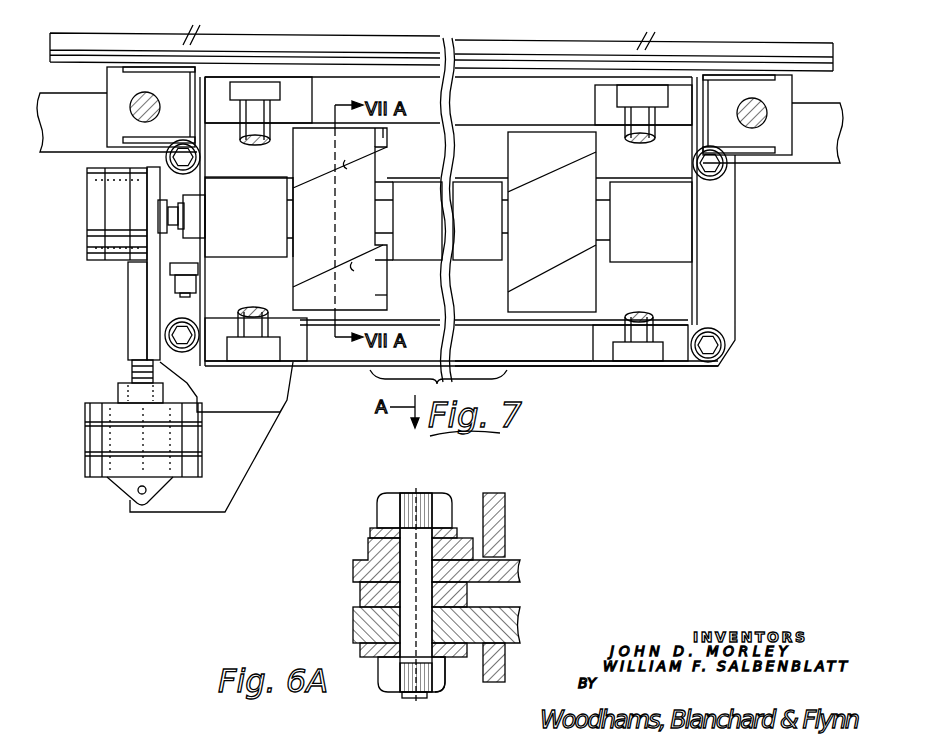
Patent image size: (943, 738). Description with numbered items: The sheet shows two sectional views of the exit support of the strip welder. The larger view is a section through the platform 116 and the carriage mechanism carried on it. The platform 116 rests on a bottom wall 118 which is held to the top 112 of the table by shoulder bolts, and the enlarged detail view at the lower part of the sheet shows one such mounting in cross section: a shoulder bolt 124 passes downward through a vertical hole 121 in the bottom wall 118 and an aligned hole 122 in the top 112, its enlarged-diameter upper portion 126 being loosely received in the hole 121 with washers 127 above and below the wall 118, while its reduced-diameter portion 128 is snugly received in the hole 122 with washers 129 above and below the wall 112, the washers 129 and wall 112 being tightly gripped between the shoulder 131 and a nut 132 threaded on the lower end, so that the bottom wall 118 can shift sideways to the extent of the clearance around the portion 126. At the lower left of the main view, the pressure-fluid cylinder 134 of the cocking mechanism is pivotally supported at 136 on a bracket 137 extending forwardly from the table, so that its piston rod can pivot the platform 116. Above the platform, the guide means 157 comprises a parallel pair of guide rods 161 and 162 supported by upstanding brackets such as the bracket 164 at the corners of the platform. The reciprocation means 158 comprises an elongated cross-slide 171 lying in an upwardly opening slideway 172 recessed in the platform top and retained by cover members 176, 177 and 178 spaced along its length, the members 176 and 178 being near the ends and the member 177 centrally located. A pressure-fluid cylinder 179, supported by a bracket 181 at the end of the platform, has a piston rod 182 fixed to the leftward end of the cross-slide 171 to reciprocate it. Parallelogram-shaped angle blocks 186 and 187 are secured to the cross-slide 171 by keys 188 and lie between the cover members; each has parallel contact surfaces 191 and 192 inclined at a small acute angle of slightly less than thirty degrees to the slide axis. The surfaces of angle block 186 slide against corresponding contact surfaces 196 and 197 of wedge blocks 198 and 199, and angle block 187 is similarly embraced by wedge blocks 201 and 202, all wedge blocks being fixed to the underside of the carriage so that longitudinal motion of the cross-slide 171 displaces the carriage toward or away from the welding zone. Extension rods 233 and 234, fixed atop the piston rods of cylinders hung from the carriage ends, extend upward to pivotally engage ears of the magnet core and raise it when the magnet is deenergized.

In FIG. 6A, the top 112 is at (518, 623).
In FIG. 7, the platform 116 is at (578, 358).
In FIG. 7, the bottom wall 118 is at (727, 262).
In FIG. 6A, the bottom wall 118 is at (520, 575).
In FIG. 6A, the vertical holes 121 is at (473, 557).
In FIG. 6A, the holes 122 is at (452, 663).
In FIG. 7, the shoulder bolt 124 is at (713, 337).
In FIG. 6A, the shoulder bolt 124 is at (423, 496).
In FIG. 6A, the enlarged-diameter upper portion 126 is at (410, 538).
In FIG. 7, the washers 127 is at (728, 353).
In FIG. 6A, the washers 127 is at (362, 557).
In FIG. 6A, the reduced-diameter portion 128 is at (403, 627).
In FIG. 6A, the washers 129 is at (378, 607).
In FIG. 6A, the shoulder 131 is at (378, 568).
In FIG. 6A, the nut 132 is at (393, 677).
In FIG. 7, the pressure-fluid cylinder 134 is at (90, 464).
In FIG. 7, the pivot 136 is at (135, 493).
In FIG. 7, the bracket 137 is at (245, 468).
In FIG. 7, the guide means 157 is at (667, 374).
In FIG. 7, the reciprocation means 158 is at (96, 274).
In FIG. 7, the guide rod 161 is at (281, 108).
In FIG. 7, the guide rod 162 is at (650, 330).
In FIG. 7, the upstanding bracket 164 is at (257, 92).
In FIG. 7, the cross-slide 171 is at (386, 233).
In FIG. 7, the slideway 172 is at (383, 185).
In FIG. 7, the cover member 176 is at (246, 217).
In FIG. 7, the cover member 177 is at (480, 221).
In FIG. 7, the cover member 178 is at (651, 222).
In FIG. 7, the pressure-fluid cylinder 179 is at (92, 200).
In FIG. 7, the bracket 181 is at (180, 248).
In FIG. 7, the piston rod 182 is at (163, 228).
In FIG. 7, the angle block 186 is at (340, 219).
In FIG. 7, the angle block 187 is at (552, 222).
In FIG. 7, the keys 188 is at (377, 220).
In FIG. 7, the contact surface 191 is at (345, 165).
In FIG. 7, the contact surface 192 is at (303, 289).
In FIG. 7, the contact surface 196 is at (322, 170).
In FIG. 7, the contact surface 197 is at (352, 262).
In FIG. 7, the wedge block 198 is at (377, 136).
In FIG. 7, the wedge block 199 is at (380, 301).
In FIG. 7, the wedge block 201 is at (552, 163).
In FIG. 7, the wedge block 202 is at (552, 278).
In FIG. 7, the extension rod 233 is at (130, 108).
In FIG. 7, the extension rod 234 is at (768, 114).